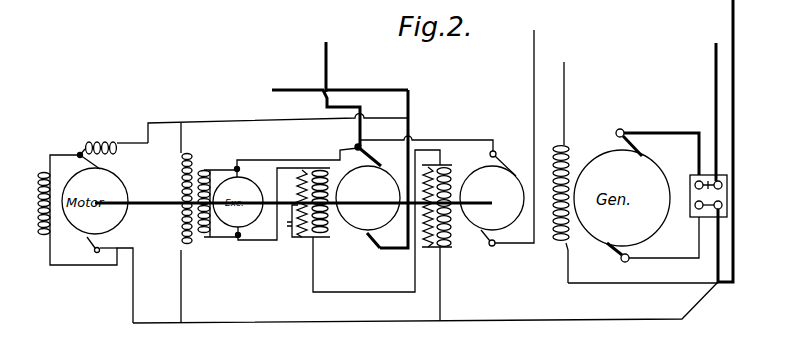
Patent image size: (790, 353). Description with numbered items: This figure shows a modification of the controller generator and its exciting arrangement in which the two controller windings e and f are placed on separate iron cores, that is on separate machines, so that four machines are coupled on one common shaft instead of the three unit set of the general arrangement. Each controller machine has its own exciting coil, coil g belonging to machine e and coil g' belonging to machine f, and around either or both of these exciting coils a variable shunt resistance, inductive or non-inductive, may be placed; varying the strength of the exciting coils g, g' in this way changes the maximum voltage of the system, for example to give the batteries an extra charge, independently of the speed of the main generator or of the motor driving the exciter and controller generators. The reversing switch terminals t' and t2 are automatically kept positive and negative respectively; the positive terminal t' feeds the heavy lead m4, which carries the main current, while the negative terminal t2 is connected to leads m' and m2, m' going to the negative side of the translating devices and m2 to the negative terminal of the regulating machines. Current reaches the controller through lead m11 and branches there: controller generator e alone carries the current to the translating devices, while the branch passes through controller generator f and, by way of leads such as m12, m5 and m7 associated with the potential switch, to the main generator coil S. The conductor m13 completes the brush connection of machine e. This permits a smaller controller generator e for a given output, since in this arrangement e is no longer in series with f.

The lead m' is at (733, 141).
The lead m2 is at (518, 318).
The heavy lead m4 is at (714, 80).
The lead m5 is at (630, 284).
The lead m7 is at (566, 93).
The lead m11 is at (327, 60).
The lead m12 is at (534, 62).
The conductor to machine e brush m13 is at (411, 108).
The controller generator winding e is at (368, 196).
The controller generator winding f is at (492, 198).
The exciting coil g is at (317, 216).
The exciting coil g' is at (450, 213).
The positive terminal t' is at (699, 166).
The negative terminal t2 is at (694, 212).
The main generator coil S is at (560, 186).